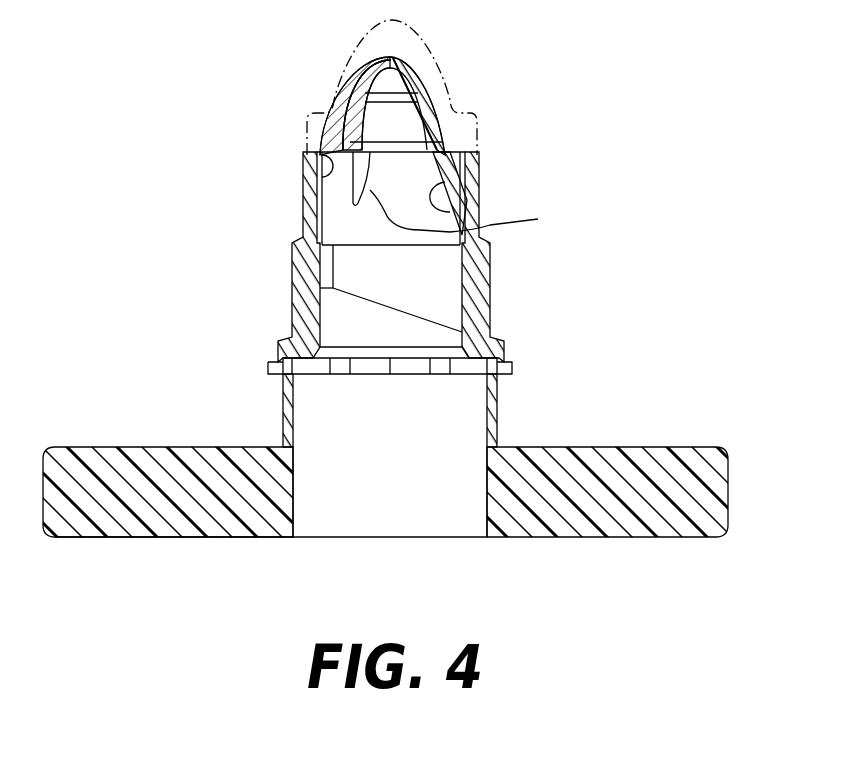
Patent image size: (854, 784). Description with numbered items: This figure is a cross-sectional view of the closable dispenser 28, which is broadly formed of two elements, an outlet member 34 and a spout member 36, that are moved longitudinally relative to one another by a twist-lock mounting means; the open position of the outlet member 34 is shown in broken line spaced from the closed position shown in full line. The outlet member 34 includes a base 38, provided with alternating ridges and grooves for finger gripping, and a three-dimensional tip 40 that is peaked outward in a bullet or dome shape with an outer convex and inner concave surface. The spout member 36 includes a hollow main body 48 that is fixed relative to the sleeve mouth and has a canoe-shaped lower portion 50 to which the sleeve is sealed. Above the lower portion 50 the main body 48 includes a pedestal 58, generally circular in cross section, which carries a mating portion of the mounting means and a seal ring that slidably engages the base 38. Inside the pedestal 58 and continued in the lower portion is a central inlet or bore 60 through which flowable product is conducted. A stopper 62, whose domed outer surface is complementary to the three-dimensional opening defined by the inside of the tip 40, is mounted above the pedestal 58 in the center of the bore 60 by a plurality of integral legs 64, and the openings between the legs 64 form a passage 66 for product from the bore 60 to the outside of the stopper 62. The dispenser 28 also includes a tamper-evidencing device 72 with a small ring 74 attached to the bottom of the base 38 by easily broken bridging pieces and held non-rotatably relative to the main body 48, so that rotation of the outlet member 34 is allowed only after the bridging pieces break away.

The closable dispenser 28 is at (581, 101).
The outlet member 34 is at (290, 287).
The spout member 36 is at (627, 444).
The base 38 is at (492, 302).
The 3-D tip 40 is at (353, 80).
The hollow main body 48 is at (285, 403).
The lower portion 50 is at (117, 538).
The pedestal 58 is at (337, 214).
The central inlet or bore 60 is at (380, 507).
The stopper 62 is at (404, 124).
The integral legs 64 is at (450, 208).
The passage 66 is at (324, 170).
The tamper-evidencing device 72 is at (262, 345).
The ring 74 is at (508, 342).